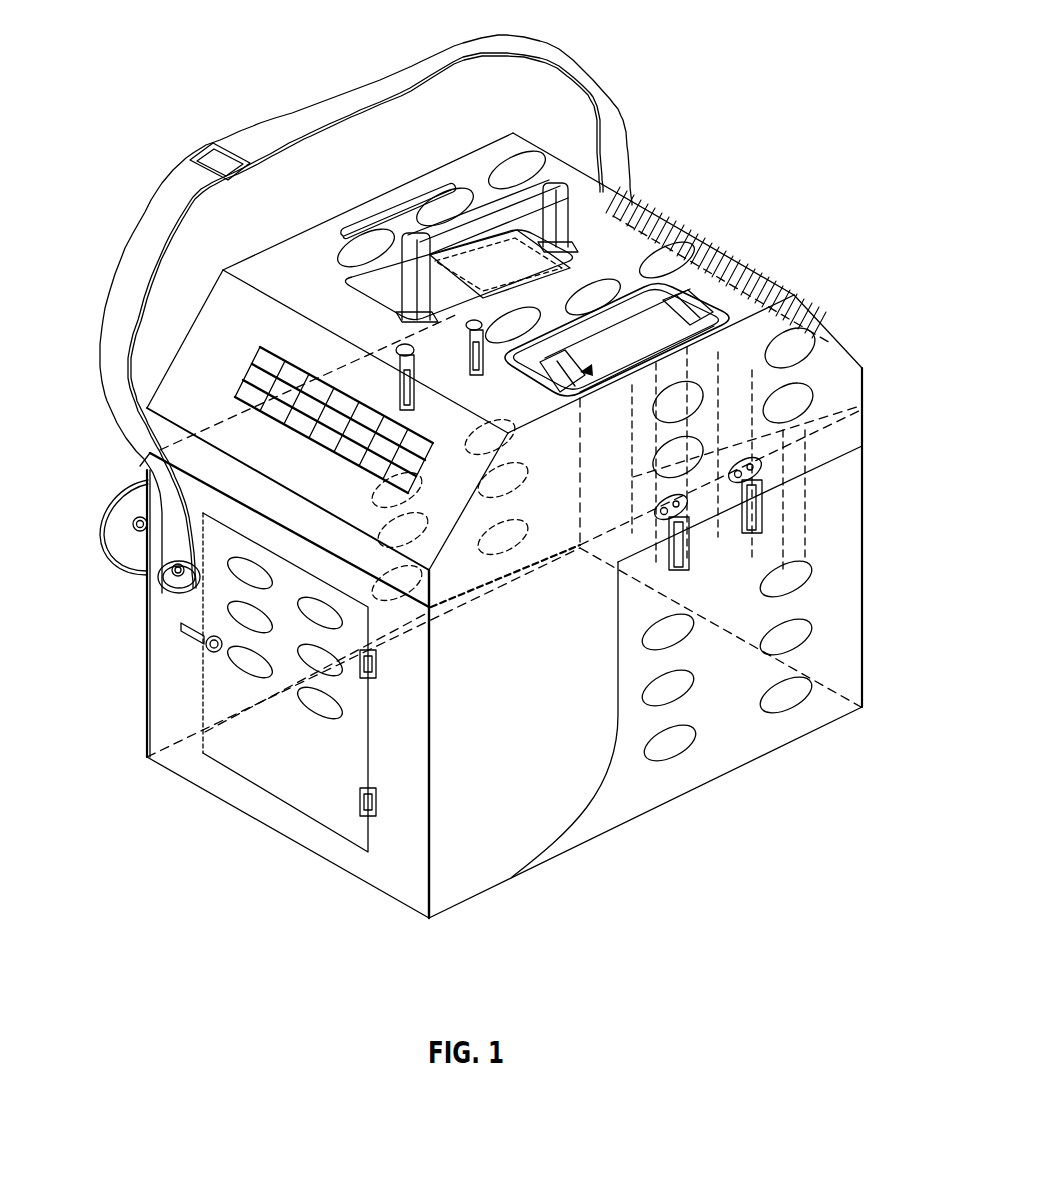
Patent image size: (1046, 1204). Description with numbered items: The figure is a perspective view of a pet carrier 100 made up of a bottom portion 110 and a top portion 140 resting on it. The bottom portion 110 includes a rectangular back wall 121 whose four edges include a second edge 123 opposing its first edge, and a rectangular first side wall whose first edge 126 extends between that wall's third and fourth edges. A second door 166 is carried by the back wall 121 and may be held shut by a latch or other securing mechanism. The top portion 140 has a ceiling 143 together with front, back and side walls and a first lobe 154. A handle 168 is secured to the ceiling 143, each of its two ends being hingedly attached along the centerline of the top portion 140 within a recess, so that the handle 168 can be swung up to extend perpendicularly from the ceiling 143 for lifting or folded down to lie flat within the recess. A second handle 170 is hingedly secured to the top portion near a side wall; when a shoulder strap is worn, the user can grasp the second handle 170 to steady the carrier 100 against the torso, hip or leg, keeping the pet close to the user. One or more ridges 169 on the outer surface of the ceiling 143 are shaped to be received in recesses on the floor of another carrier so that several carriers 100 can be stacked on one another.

The pet carrier 100 is at (128, 150).
The bottom portion 110 is at (678, 812).
The back wall 121 is at (126, 674).
The second edge of the back wall 123 is at (143, 610).
The first edge of the first side wall 126 is at (873, 594).
The top portion 140 is at (452, 152).
The ceiling 143 is at (280, 263).
The first lobe 154 is at (471, 910).
The second door 166 is at (189, 701).
The handle 168 is at (426, 240).
The ridge 169 is at (366, 216).
The second handle 170 is at (659, 297).